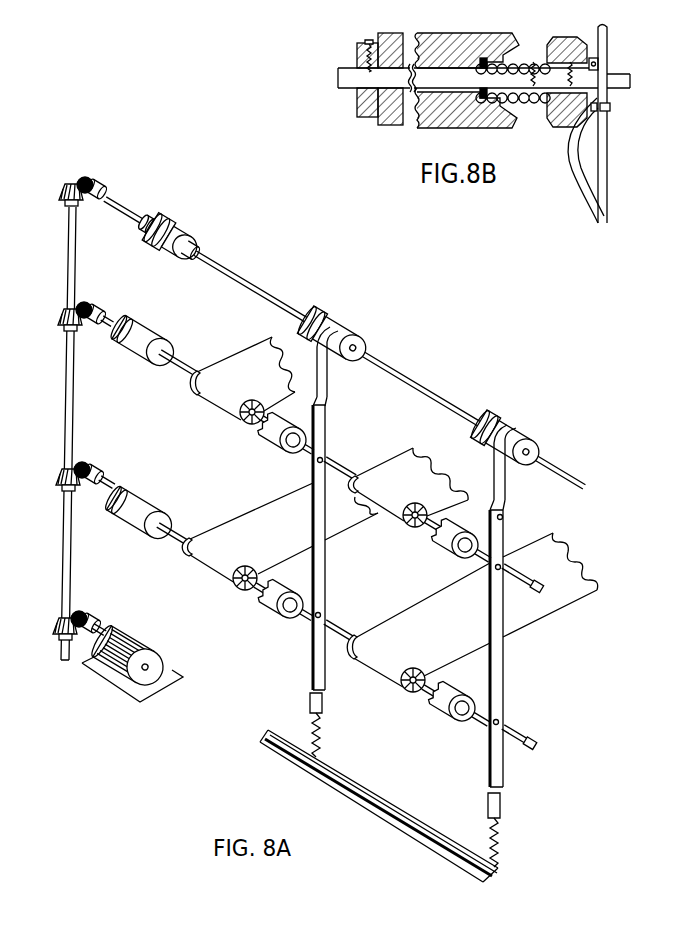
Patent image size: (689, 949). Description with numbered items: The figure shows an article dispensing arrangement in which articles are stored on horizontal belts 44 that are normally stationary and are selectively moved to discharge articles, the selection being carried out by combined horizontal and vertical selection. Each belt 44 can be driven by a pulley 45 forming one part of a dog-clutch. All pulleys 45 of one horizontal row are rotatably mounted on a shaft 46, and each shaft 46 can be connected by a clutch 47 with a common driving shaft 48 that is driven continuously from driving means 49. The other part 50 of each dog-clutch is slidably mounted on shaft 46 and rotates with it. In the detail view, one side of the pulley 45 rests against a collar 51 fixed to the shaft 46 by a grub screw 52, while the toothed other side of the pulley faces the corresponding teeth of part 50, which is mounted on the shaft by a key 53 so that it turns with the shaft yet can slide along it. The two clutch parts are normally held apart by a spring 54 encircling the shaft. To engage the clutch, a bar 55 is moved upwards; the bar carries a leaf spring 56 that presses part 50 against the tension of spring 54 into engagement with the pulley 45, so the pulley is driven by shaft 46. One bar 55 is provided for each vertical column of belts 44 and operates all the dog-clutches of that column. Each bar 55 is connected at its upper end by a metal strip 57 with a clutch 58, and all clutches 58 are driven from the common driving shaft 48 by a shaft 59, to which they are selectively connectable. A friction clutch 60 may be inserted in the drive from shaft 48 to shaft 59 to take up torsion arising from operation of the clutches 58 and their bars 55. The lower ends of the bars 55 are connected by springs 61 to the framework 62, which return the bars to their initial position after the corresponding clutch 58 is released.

In FIG. 8A, the belt 44 is at (232, 364).
In FIG. 8A, the pulley 45 is at (246, 421).
In FIG. 8B, the pulley 45 is at (444, 127).
In FIG. 8A, the shaft 46 is at (177, 370).
In FIG. 8B, the shaft 46 is at (340, 77).
In FIG. 8A, the clutch 47 is at (140, 357).
In FIG. 8A, the common driving shaft 48 is at (71, 396).
In FIG. 8A, the driving means 49 is at (133, 644).
In FIG. 8A, the other part of dog-clutch 50 is at (278, 441).
In FIG. 8B, the other part of dog-clutch 50 is at (578, 40).
In FIG. 8A, the collar 51 is at (196, 372).
In FIG. 8B, the collar 51 is at (361, 110).
In FIG. 8B, the grub screw 52 is at (369, 41).
In FIG. 8B, the key 53 is at (607, 66).
In FIG. 8B, the spring 54 is at (527, 104).
In FIG. 8A, the bar 55 is at (322, 435).
In FIG. 8B, the bar 55 is at (608, 38).
In FIG. 8B, the leaf spring 56 is at (592, 197).
In FIG. 8A, the metal strip 57 is at (326, 379).
In FIG. 8A, the clutch 58 is at (324, 323).
In FIG. 8A, the shaft 59 is at (255, 294).
In FIG. 8A, the friction clutch 60 is at (180, 237).
In FIG. 8A, the spring 61 is at (318, 737).
In FIG. 8A, the framework 62 is at (351, 792).